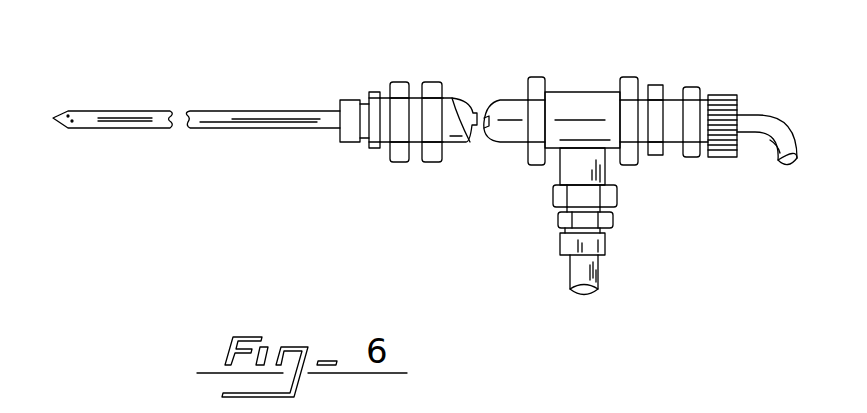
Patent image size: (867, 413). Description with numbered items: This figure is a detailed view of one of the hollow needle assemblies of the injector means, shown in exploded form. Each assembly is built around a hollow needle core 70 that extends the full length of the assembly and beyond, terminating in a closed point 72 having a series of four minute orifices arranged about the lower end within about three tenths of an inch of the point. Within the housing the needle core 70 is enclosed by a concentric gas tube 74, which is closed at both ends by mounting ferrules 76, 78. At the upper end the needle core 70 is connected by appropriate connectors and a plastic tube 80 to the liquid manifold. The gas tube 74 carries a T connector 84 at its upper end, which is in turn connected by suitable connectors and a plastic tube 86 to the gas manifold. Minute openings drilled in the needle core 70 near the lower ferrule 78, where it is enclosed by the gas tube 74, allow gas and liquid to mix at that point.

The hollow needle core 70 is at (225, 112).
The closed point 72 is at (63, 112).
The concentric gas tube 74 is at (448, 100).
The mounting ferrule 76 is at (633, 80).
The mounting ferrule 78 is at (428, 80).
The plastic tube 80 is at (777, 160).
The T connector 84 is at (560, 167).
The plastic tube 86 is at (570, 273).